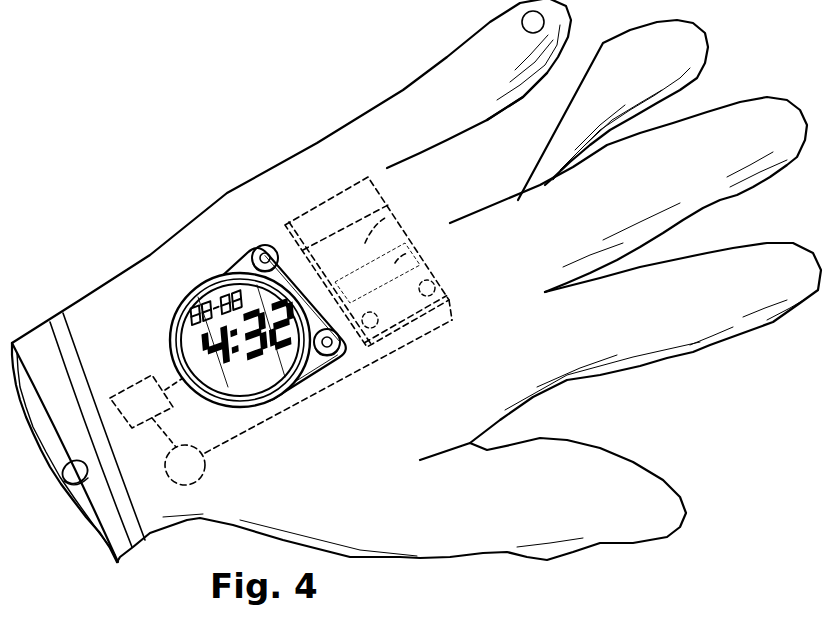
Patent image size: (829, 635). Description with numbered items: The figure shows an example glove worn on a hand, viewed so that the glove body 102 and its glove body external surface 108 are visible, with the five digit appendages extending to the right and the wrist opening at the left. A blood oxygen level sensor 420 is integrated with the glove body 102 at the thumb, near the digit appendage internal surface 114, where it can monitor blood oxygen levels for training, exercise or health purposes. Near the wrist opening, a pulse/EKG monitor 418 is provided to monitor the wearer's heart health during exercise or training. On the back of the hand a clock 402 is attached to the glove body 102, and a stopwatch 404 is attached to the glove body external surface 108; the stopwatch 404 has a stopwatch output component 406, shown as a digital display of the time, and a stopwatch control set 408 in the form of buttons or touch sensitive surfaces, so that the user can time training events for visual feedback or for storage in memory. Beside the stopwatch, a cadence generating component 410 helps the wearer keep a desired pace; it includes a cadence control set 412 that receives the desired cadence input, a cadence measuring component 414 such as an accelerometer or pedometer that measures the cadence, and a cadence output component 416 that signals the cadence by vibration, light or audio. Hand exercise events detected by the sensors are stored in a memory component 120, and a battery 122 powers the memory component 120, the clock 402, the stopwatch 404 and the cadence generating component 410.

The glove body 102 is at (207, 203).
The glove body external surface 108 is at (150, 287).
The digit appendage internal surface 114 is at (485, 51).
The memory component 120 is at (135, 398).
The battery 122 is at (208, 468).
The clock 402 is at (278, 418).
The stopwatch 404 is at (215, 293).
The stopwatch output component 406 is at (193, 338).
The stopwatch control set 408 is at (260, 247).
The cadence generating component 410 is at (395, 217).
The cadence control set 412 is at (378, 325).
The cadence measuring component 414 is at (420, 247).
The cadence output component 416 is at (343, 217).
The pulse/EKG monitor 418 is at (62, 473).
The blood oxygen level sensor 420 is at (537, 23).